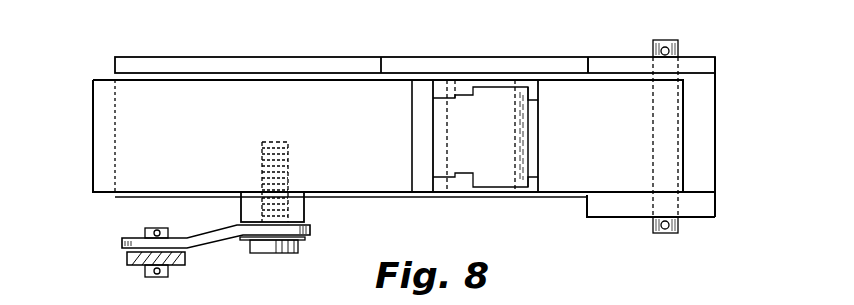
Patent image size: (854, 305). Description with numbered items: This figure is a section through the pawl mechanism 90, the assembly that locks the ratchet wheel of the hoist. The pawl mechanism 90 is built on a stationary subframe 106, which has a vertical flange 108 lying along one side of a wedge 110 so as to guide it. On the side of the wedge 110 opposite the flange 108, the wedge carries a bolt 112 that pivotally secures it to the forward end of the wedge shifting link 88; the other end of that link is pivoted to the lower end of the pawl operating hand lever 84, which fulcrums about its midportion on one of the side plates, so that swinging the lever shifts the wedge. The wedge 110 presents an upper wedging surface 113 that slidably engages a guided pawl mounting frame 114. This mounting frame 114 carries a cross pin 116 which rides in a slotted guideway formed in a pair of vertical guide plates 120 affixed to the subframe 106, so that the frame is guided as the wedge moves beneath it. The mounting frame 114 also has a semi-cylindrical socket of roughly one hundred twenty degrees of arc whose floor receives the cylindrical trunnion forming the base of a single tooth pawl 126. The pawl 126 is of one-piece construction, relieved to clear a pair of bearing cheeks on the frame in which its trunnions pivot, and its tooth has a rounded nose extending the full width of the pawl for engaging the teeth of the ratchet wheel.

The pawl operating hand lever 84 is at (127, 257).
The wedge shifting link 88 is at (215, 237).
The pawl mechanism 90 is at (572, 58).
The stationary subframe 106 is at (716, 144).
The vertical flange 108 is at (393, 62).
The wedge 110 is at (93, 111).
The bolt 112 is at (292, 150).
The upper wedging surface 113 is at (397, 180).
The guided pawl mounting frame 114 is at (533, 182).
The cross pin 116 is at (655, 40).
The vertical guide plates 120 is at (700, 62).
The single tooth pawl 126 is at (530, 140).